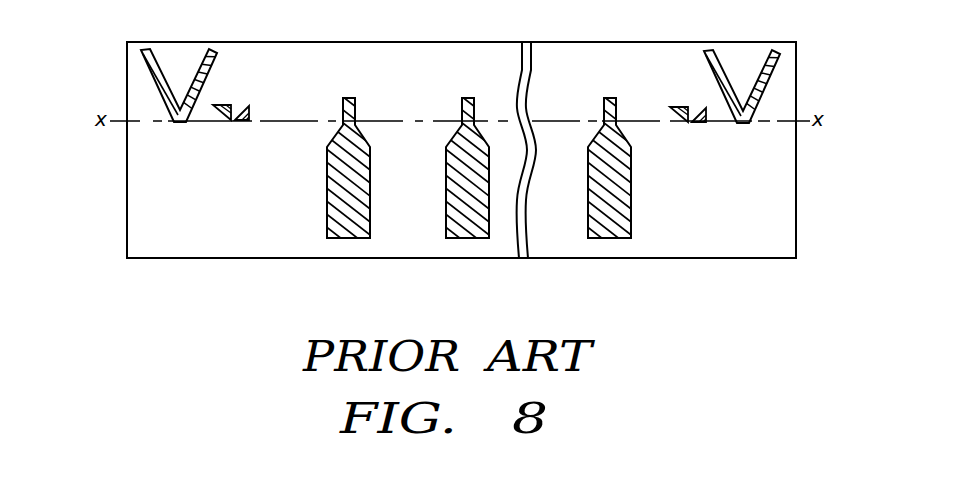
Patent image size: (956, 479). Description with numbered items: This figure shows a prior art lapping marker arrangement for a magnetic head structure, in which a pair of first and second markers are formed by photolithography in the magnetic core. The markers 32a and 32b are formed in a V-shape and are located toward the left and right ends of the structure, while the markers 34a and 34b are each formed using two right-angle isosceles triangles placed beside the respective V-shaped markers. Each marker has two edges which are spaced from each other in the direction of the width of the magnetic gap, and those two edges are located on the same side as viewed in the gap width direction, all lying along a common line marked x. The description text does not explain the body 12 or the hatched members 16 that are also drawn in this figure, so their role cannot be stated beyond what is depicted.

The substrate / wafer 12 is at (108, 245).
The conductor lines 16 is at (333, 226).
The first marker 32a is at (132, 71).
The first marker 32b is at (790, 74).
The second marker 34a is at (232, 140).
The second marker 34b is at (695, 143).